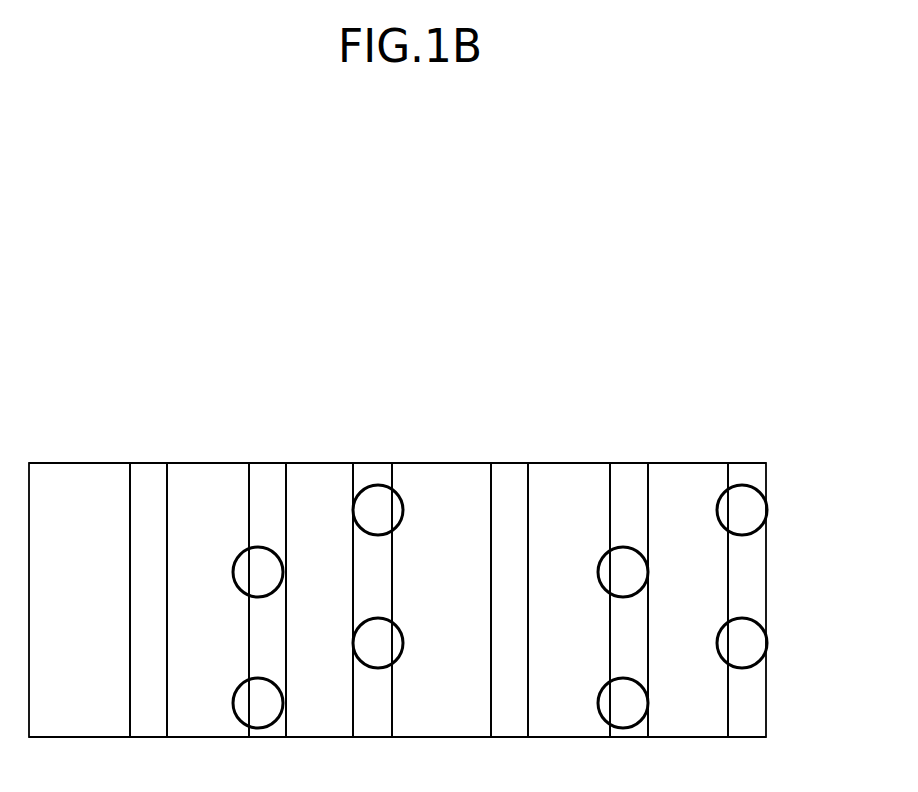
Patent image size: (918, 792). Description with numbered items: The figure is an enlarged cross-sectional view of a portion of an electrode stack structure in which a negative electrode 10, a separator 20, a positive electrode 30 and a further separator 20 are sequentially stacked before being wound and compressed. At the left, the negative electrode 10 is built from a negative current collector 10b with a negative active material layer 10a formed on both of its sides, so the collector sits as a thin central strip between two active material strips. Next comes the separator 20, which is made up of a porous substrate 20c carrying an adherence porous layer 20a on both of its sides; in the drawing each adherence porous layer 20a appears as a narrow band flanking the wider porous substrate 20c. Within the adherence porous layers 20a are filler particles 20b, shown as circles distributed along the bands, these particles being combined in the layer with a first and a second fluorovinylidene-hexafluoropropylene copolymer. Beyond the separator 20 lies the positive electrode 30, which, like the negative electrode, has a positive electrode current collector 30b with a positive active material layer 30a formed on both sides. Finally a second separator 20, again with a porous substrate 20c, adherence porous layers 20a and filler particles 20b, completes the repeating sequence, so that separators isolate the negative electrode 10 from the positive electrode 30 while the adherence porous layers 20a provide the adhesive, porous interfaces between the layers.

The negative electrode 10 is at (150, 354).
The negative active material layer 10a is at (81, 463).
The negative current collector 10b is at (146, 463).
The separator 20 is at (325, 354).
The adherence porous layer 20a is at (264, 463).
The filler particles 20b is at (277, 551).
The porous substrate 20c is at (329, 463).
The positive electrode 30 is at (516, 354).
The positive active material layer 30a is at (446, 463).
The positive electrode current collector 30b is at (509, 463).